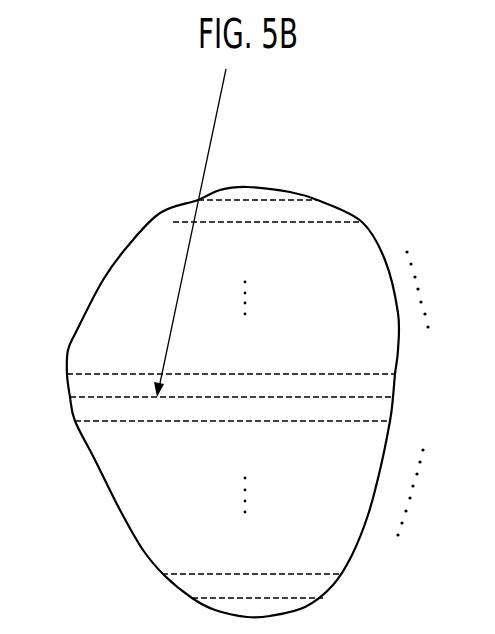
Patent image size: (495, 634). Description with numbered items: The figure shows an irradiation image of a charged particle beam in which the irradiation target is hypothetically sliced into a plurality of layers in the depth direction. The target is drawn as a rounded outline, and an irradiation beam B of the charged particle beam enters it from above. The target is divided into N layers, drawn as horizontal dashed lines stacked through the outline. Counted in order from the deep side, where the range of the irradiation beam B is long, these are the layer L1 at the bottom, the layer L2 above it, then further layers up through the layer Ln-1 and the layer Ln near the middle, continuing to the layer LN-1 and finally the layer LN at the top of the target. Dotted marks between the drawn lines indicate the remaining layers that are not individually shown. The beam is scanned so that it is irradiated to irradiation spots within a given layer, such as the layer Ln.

The irradiation beam B is at (209, 147).
The layer L_N LN is at (260, 200).
The layer L_N-1 LN-1 is at (322, 222).
The layer L_n Ln is at (372, 397).
The layer L_n-1 Ln-1 is at (357, 421).
The layer L_2 L2 is at (320, 574).
The layer L_1 L1 is at (297, 598).